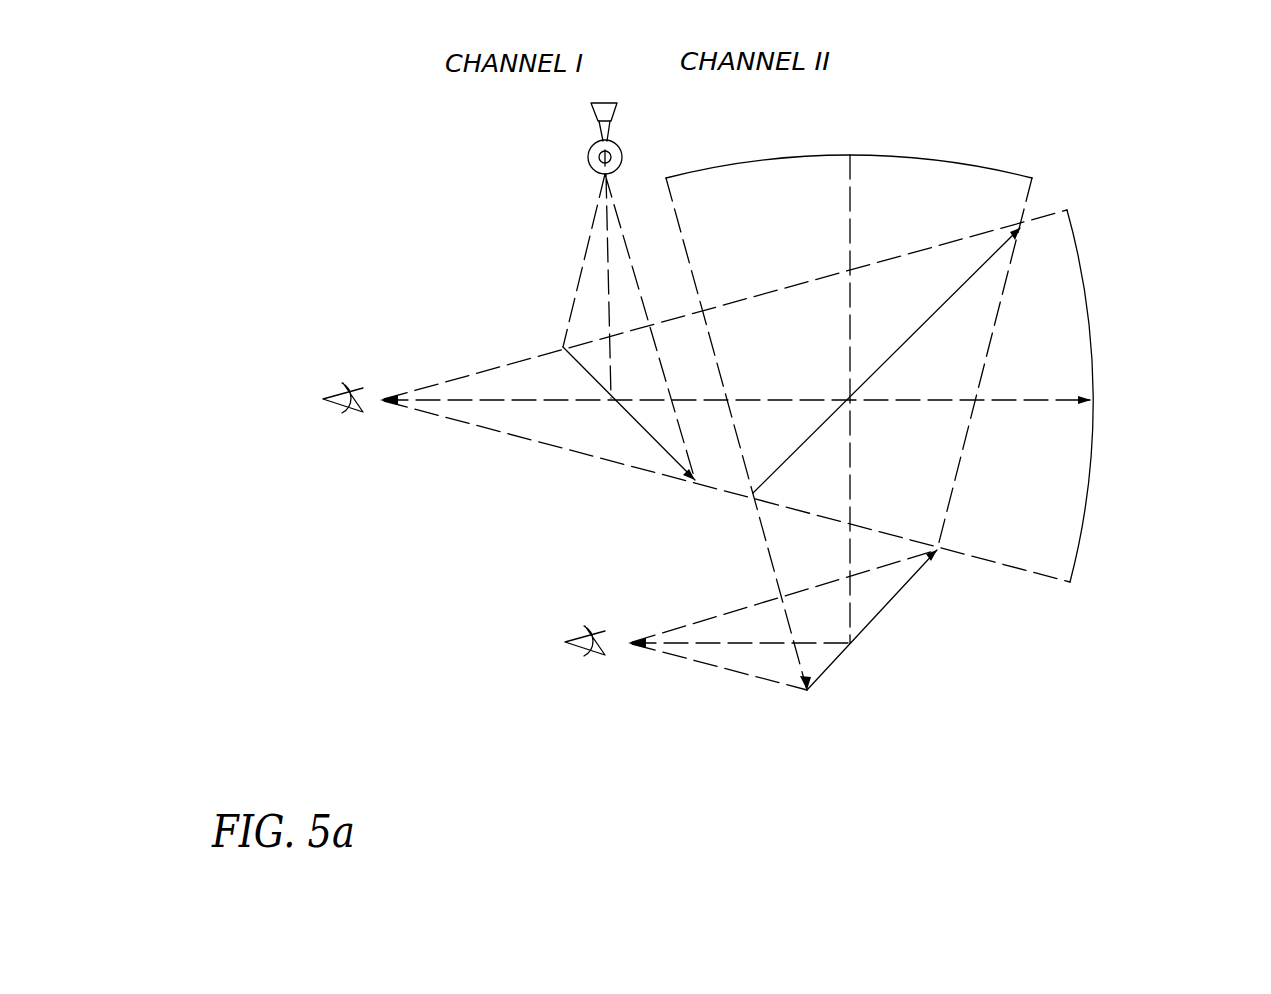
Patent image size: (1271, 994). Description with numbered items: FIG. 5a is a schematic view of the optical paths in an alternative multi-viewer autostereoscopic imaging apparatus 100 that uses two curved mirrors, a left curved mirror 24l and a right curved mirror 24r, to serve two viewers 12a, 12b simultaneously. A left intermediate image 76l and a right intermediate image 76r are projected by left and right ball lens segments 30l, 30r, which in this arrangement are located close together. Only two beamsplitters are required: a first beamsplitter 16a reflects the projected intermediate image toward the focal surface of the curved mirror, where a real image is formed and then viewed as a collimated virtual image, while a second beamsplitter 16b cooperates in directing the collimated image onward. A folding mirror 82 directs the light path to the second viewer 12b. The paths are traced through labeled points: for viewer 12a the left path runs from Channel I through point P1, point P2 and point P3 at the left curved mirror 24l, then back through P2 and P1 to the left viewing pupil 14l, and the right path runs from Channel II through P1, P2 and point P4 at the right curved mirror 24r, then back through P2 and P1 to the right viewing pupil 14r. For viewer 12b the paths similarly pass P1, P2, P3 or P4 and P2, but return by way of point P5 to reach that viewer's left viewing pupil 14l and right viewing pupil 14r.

The multi-viewer autostereoscopic imaging apparatus 100 is at (1022, 721).
The viewer 12a is at (372, 310).
The viewer 12b is at (555, 672).
The left viewing pupil 14l is at (397, 493).
The right viewing pupil 14r is at (330, 398).
The beamsplitter 16a is at (581, 369).
The second beamsplitter 16b is at (917, 328).
The left curved mirror 24l is at (957, 160).
The right curved mirror 24r is at (1087, 508).
The left ball lens segment 30l is at (523, 178).
The right ball lens segment 30r is at (590, 162).
The left intermediate image 76l is at (516, 123).
The right intermediate image 76r is at (592, 110).
The folding mirror 82 is at (893, 600).
The point P1 is at (612, 400).
The point P2 is at (850, 400).
The point P3 is at (850, 157).
The point P4 is at (1088, 401).
The point P5 is at (852, 643).